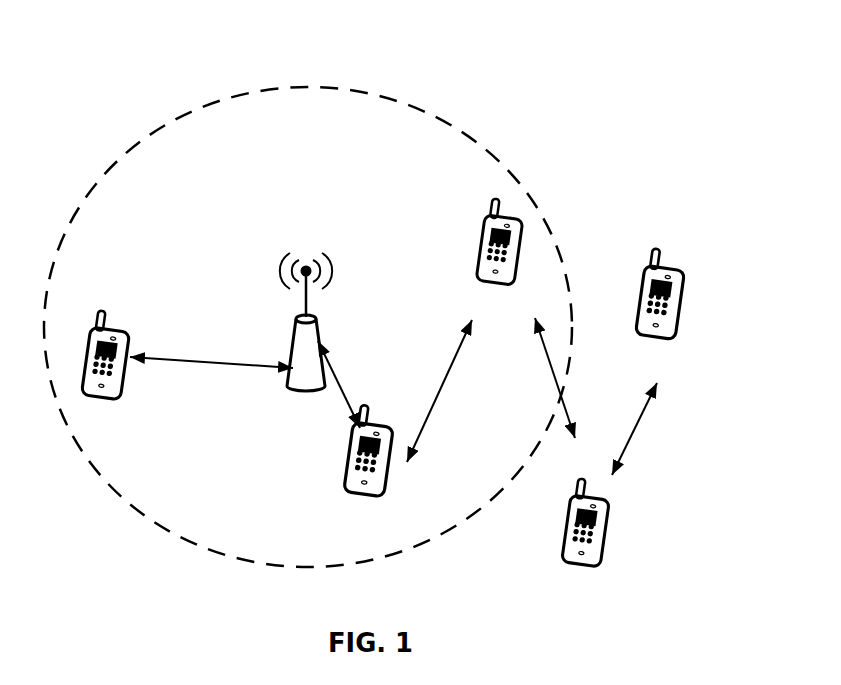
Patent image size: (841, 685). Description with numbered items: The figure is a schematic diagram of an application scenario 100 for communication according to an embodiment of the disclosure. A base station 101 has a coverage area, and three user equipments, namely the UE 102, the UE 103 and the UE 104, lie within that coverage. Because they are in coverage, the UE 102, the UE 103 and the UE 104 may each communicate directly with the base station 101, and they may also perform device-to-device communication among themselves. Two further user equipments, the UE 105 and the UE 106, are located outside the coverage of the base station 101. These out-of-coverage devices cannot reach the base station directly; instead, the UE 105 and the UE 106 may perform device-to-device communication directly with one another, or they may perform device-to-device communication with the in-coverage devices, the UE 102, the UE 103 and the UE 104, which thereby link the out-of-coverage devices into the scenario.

The application scenario 100 is at (279, 78).
The base station 101 is at (282, 348).
The UE 102 is at (104, 370).
The UE 103 is at (367, 465).
The UE 104 is at (498, 258).
The UE 105 is at (659, 308).
The UE 106 is at (585, 538).